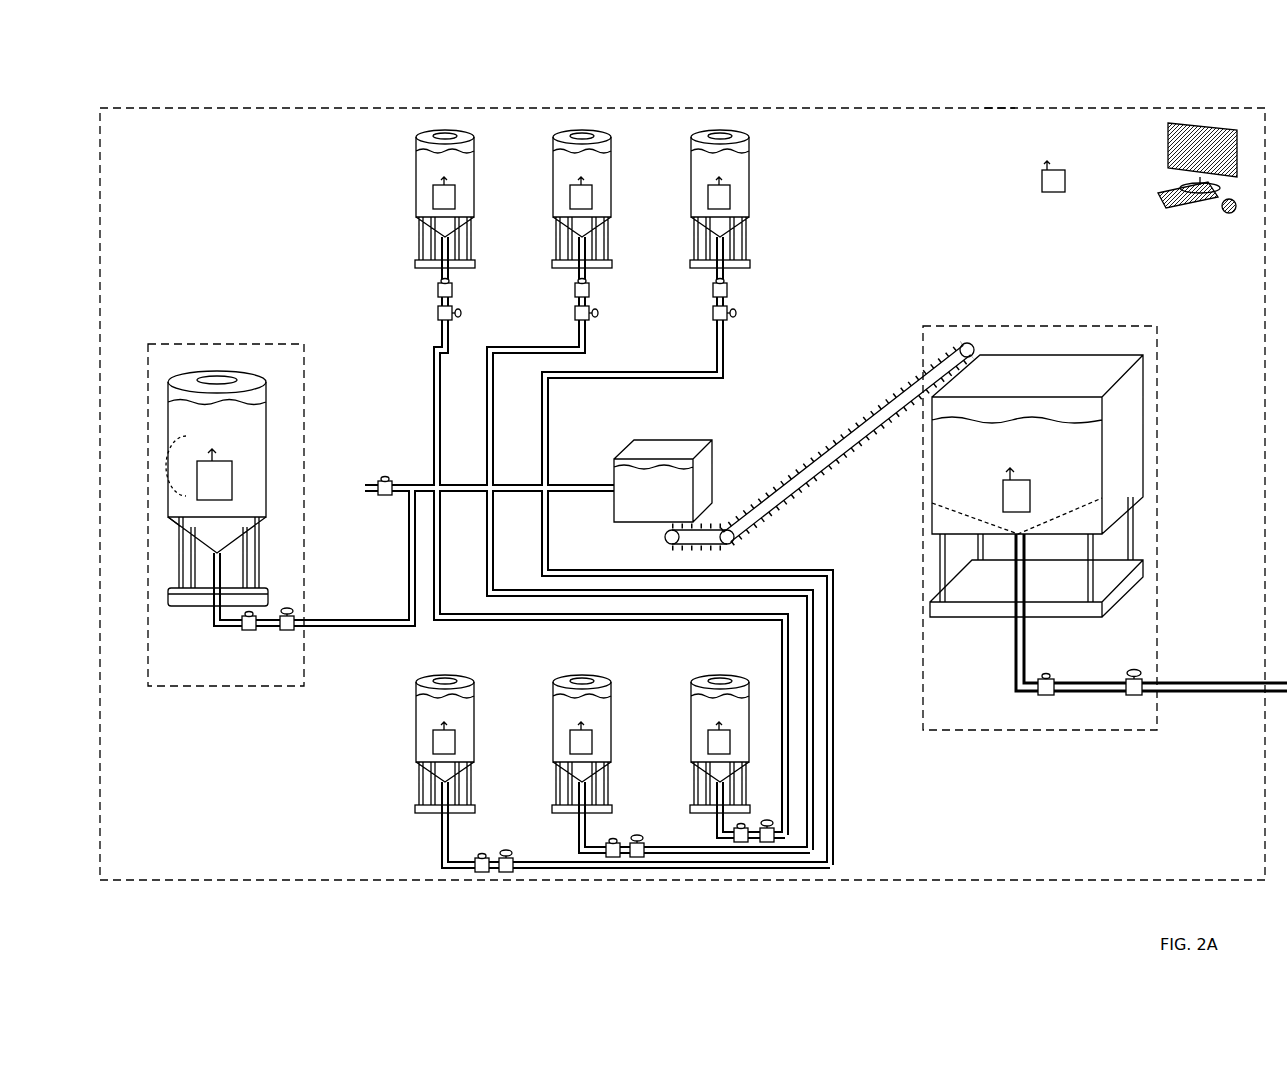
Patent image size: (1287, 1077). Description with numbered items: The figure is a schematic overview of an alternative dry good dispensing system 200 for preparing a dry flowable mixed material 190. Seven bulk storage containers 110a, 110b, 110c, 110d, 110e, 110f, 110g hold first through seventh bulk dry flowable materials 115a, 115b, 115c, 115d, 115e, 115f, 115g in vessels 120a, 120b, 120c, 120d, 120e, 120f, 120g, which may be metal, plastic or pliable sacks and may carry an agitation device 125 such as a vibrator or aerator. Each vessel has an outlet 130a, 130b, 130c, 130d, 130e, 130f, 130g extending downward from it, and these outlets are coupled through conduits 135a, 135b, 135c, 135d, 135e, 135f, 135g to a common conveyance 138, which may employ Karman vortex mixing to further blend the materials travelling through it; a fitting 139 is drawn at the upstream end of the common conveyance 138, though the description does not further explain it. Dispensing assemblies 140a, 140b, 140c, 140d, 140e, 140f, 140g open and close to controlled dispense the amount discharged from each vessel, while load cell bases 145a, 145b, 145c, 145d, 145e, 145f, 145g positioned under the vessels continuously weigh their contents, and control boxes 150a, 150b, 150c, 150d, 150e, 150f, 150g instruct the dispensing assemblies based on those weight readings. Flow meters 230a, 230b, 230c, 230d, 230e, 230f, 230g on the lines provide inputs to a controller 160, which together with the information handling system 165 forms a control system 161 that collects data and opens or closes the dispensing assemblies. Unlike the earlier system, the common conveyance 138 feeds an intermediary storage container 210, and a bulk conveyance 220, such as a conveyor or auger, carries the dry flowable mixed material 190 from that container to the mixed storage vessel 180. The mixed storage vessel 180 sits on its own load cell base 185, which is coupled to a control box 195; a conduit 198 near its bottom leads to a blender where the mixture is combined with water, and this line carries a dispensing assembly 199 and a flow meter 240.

The dry good dispensing system 200 is at (152, 88).
The first bulk storage container 110a is at (192, 365).
The second bulk storage container 110b is at (402, 133).
The third bulk storage container 110c is at (402, 678).
The fourth bulk storage container 110d is at (539, 133).
The fifth bulk storage container 110e is at (539, 678).
The sixth bulk storage container 110f is at (677, 133).
The seventh bulk storage container 110g is at (677, 678).
The first bulk dry flowable material 115a is at (217, 459).
The second bulk dry flowable material 115b is at (445, 184).
The third bulk dry flowable material 115c is at (445, 729).
The fourth bulk dry flowable material 115d is at (582, 184).
The fifth bulk dry flowable material 115e is at (582, 729).
The sixth bulk dry flowable material 115f is at (720, 184).
The seventh bulk dry flowable material 115g is at (720, 729).
The vessel 120a is at (169, 421).
The vessel 120b is at (412, 148).
The vessel 120c is at (412, 693).
The vessel 120d is at (549, 148).
The vessel 120e is at (549, 693).
The vessel 120f is at (688, 148).
The vessel 120g is at (687, 693).
The agitation device 125 is at (190, 522).
The outlet 130a is at (205, 545).
The outlet 130b is at (411, 238).
The outlet 130c is at (411, 783).
The outlet 130d is at (548, 238).
The outlet 130e is at (548, 783).
The outlet 130f is at (687, 238).
The outlet 130g is at (686, 783).
The conduit 135a is at (318, 618).
The conduit 135b is at (438, 342).
The conduit 135c is at (545, 873).
The conduit 135d is at (575, 342).
The conduit 135e is at (685, 858).
The conduit 135f is at (713, 342).
The conduit 135g is at (790, 812).
The common conveyance 138 is at (596, 496).
The valve 139 is at (393, 498).
The dispensing assembly 140a is at (287, 632).
The dispensing assembly 140b is at (438, 314).
The dispensing assembly 140c is at (506, 873).
The dispensing assembly 140d is at (575, 314).
The dispensing assembly 140e is at (637, 858).
The dispensing assembly 140f is at (713, 314).
The dispensing assembly 140g is at (767, 843).
The load cell base 145a is at (169, 588).
The load cell base 145b is at (411, 266).
The load cell base 145c is at (411, 811).
The load cell base 145d is at (548, 266).
The load cell base 145e is at (548, 811).
The load cell base 145f is at (687, 266).
The load cell base 145g is at (686, 811).
The control box 150a is at (200, 482).
The control box 150b is at (400, 194).
The control box 150c is at (400, 739).
The control box 150d is at (537, 194).
The control box 150e is at (537, 739).
The control box 150f is at (676, 194).
The control box 150g is at (675, 739).
The controller 160 is at (1052, 194).
The control system 161 is at (1000, 110).
The information handling system 165 is at (1168, 148).
The mixed storage vessel 180 is at (1146, 526).
The load cell base 185 is at (932, 603).
The dry flowable mixed material 190 is at (1037, 444).
The control box 195 is at (1003, 494).
The conduit 198 is at (1014, 678).
The dispensing assembly 199 is at (1135, 697).
The intermediary storage container 210 is at (596, 464).
The bulk conveyance 220 is at (836, 443).
The first flow meter 230a is at (249, 632).
The second flow meter 230b is at (438, 290).
The third flow meter 230c is at (482, 873).
The fourth flow meter 230d is at (575, 290).
The fifth flow meter 230e is at (613, 858).
The sixth flow meter 230f is at (713, 290).
The seventh flow meter 230g is at (741, 843).
The flow meter 240 is at (1048, 697).